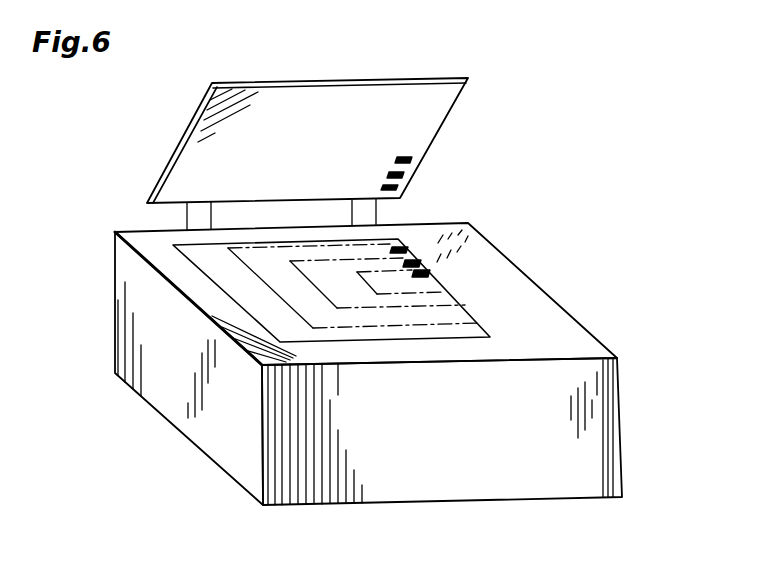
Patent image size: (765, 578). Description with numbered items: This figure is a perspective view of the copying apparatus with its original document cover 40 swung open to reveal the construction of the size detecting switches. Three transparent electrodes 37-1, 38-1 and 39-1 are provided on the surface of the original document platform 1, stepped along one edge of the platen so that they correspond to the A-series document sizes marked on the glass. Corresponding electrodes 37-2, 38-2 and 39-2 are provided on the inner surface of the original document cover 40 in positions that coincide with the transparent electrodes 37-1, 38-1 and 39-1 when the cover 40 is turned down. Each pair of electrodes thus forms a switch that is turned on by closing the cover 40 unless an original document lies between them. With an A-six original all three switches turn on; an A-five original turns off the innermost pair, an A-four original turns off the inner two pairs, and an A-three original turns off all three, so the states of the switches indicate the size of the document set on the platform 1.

The original document platform 1 is at (531, 303).
The original document cover 40 is at (340, 76).
The transparent electrode 37-1 is at (430, 275).
The transparent electrode 38-1 is at (419, 262).
The transparent electrode 39-1 is at (407, 248).
The electrode 37-2 is at (412, 157).
The electrode 38-2 is at (404, 174).
The electrode 39-2 is at (397, 187).